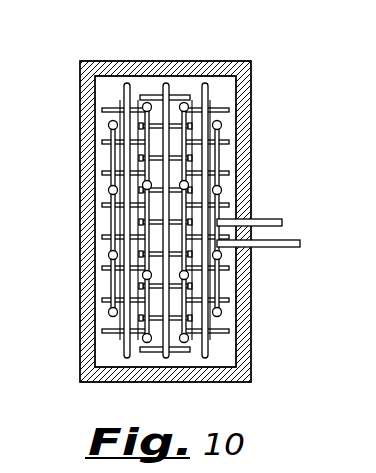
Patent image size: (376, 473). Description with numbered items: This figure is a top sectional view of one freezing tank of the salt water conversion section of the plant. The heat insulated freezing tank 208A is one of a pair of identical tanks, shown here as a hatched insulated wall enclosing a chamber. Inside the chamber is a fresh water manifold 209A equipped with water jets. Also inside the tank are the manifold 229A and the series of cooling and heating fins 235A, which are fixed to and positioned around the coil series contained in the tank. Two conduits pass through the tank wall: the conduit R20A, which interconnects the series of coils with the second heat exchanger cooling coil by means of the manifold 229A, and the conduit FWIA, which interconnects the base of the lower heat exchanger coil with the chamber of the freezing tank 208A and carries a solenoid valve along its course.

The heat insulated freezing tank 208A is at (252, 122).
The fresh water manifold 209A is at (229, 159).
The manifold 229A is at (128, 82).
The cooling and heating fins 235A is at (110, 120).
The conduit R20A is at (260, 221).
The conduit FWIA is at (280, 242).